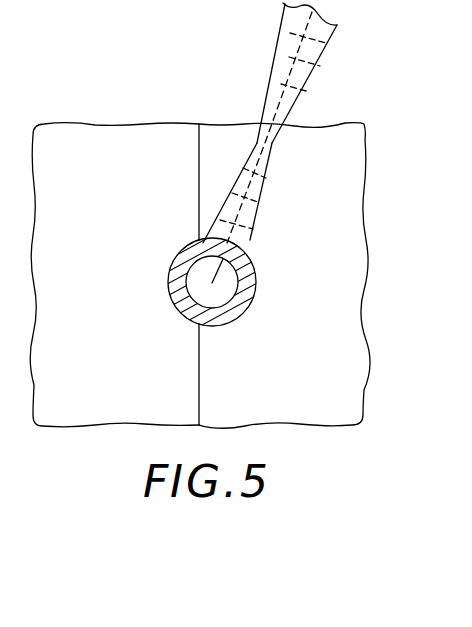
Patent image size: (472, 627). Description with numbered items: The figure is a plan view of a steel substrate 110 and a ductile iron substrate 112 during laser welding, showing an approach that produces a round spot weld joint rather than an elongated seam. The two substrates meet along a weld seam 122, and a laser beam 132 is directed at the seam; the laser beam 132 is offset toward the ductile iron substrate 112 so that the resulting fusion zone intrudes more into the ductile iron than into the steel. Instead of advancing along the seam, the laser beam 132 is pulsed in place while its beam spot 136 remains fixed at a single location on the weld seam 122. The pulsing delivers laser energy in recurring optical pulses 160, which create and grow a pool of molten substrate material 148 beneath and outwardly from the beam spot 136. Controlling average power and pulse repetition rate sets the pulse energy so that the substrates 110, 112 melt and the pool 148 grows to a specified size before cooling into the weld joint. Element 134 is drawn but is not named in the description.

The steel substrate 110 is at (112, 226).
The ductile iron substrate 112 is at (337, 232).
The weld seam 122 is at (199, 363).
The laser beam 132 is at (307, 80).
The second tube section 134 is at (268, 160).
The beam spot 136 is at (222, 294).
The pool of molten substrate material 148 is at (176, 285).
The optical pulses 160 is at (281, 80).